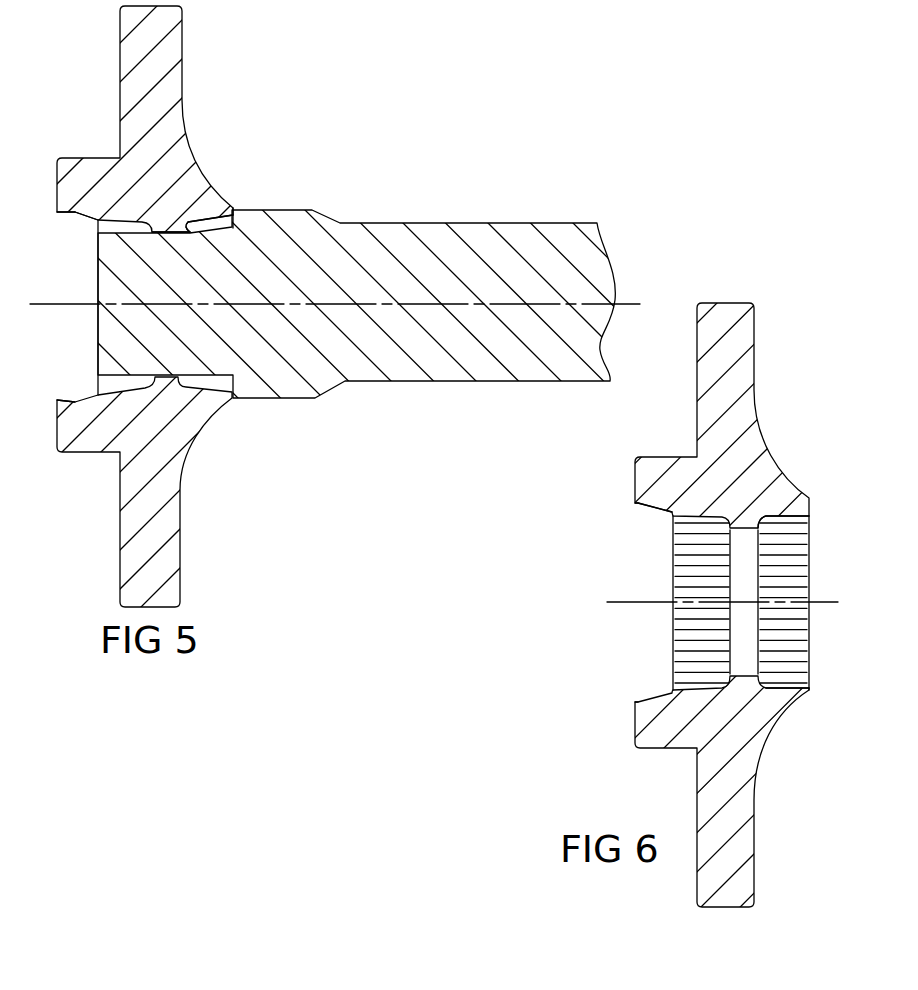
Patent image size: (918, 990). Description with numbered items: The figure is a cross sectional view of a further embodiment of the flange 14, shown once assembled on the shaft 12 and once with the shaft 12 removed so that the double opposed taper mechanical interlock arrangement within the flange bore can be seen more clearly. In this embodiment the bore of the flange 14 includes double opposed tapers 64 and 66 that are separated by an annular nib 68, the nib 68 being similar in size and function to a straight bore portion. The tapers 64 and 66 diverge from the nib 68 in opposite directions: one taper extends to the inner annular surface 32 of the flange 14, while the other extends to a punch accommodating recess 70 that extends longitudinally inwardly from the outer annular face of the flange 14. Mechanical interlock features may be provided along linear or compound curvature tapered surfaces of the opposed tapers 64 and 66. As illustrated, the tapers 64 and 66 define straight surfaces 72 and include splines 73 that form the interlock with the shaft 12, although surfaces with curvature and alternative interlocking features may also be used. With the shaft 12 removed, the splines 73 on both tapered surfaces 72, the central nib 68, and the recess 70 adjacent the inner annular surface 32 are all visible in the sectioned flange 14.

In FIG. 5, the shaft 12 is at (459, 495).
In FIG. 5, the flange 14 is at (413, 310).
In FIG. 5, the inner annular surface 32 is at (236, 208).
In FIG. 5, the taper 64 is at (103, 217).
In FIG. 6, the taper 64 is at (688, 512).
In FIG. 5, the taper 66 is at (217, 213).
In FIG. 6, the taper 66 is at (780, 518).
In FIG. 5, the annular nib 68 is at (162, 230).
In FIG. 6, the annular nib 68 is at (745, 525).
In FIG. 5, the punch accommodating recess 70 is at (77, 215).
In FIG. 6, the punch accommodating recess 70 is at (636, 512).
In FIG. 6, the straight surfaces 72 is at (800, 527).
In FIG. 6, the splines 73 is at (676, 596).